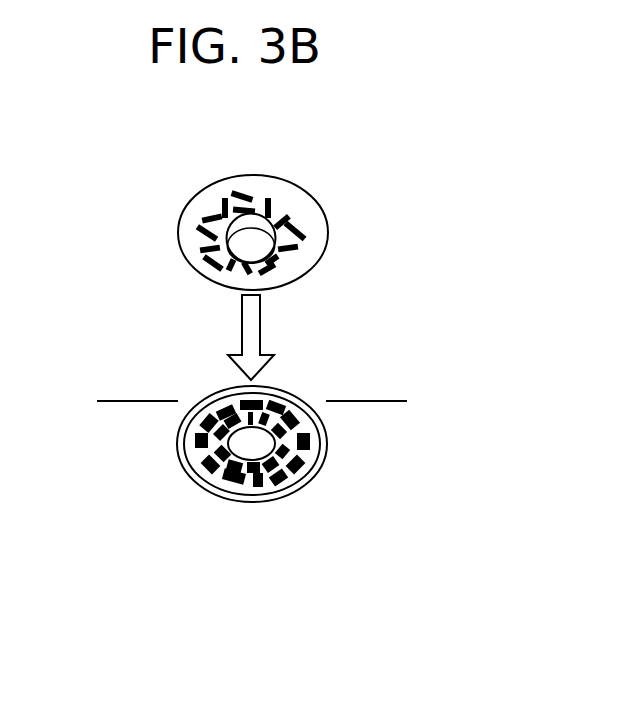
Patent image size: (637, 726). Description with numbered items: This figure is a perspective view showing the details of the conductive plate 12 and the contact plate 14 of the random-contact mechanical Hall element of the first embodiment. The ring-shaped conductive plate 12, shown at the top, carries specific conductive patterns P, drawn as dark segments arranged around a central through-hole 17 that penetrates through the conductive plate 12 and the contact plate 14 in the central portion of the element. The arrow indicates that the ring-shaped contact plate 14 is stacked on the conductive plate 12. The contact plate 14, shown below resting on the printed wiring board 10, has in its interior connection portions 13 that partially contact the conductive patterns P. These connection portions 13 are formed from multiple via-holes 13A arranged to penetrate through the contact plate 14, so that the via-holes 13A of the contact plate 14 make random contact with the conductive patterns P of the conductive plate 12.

The printed wiring board 10 is at (388, 437).
The conductive plate 12 is at (186, 233).
The connection portions 13 is at (260, 516).
The via-holes 13A is at (328, 567).
The contact plate 14 is at (177, 446).
The through-hole 17 is at (252, 240).
The conductive patterns P is at (270, 205).